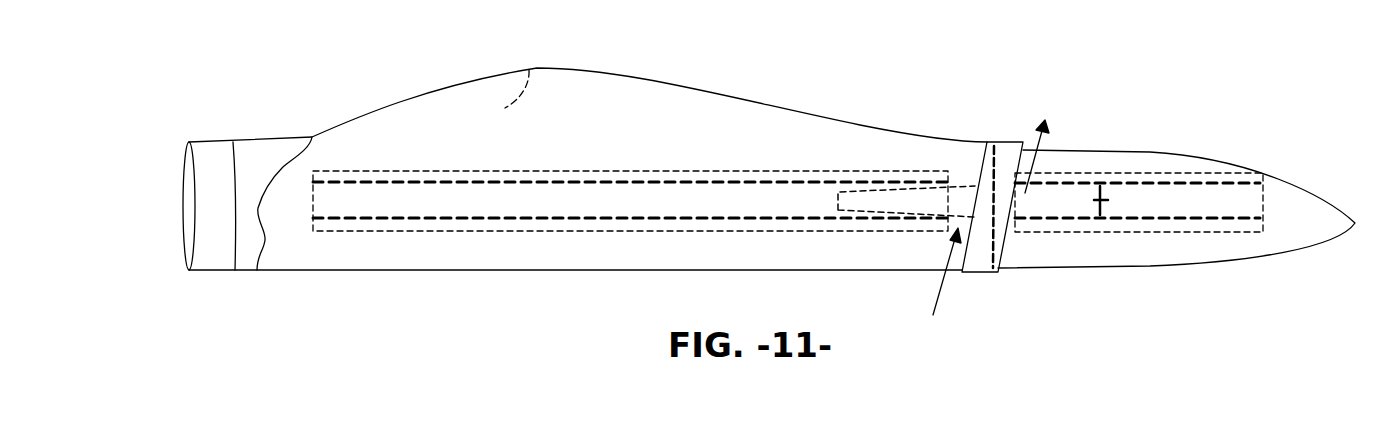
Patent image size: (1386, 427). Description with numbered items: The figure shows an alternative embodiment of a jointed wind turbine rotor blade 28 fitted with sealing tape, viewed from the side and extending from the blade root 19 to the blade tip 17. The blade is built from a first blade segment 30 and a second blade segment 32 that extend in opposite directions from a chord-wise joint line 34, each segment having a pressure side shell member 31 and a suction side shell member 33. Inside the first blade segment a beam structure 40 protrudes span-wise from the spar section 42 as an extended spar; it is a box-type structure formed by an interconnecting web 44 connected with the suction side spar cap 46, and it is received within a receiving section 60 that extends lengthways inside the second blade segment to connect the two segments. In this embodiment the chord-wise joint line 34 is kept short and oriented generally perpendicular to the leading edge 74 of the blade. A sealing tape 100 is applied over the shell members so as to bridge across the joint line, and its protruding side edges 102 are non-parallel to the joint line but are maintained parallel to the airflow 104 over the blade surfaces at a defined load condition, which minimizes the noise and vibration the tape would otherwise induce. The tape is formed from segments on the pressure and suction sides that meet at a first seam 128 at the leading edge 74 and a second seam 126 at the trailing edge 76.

The blade tip 17 is at (1315, 222).
The blade root 19 is at (252, 208).
The jointed wind turbine rotor blade 28 is at (876, 78).
The first blade segment 30 is at (1188, 165).
The pressure side shell member 31 is at (616, 137).
The second blade segment 32 is at (668, 105).
The suction side shell member 33 is at (529, 67).
The chord-wise joint line 34 is at (993, 232).
The beam structure 40 is at (850, 216).
The spar section 42 is at (693, 150).
The interconnecting web 44 is at (478, 218).
The suction side spar cap 46 is at (408, 170).
The receiving section 60 is at (1083, 235).
The leading edge 74 is at (525, 270).
The trailing edge 76 is at (808, 112).
The sealing tape 100 is at (978, 154).
The side edges 102 is at (1000, 260).
The airflow 104 is at (1040, 137).
The second seam 126 is at (1003, 148).
The first seam 128 is at (980, 274).